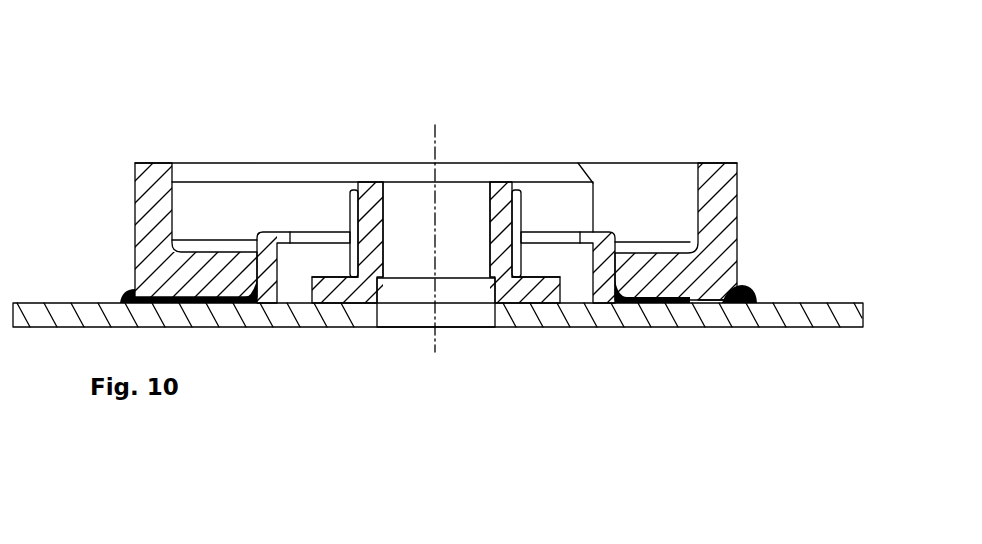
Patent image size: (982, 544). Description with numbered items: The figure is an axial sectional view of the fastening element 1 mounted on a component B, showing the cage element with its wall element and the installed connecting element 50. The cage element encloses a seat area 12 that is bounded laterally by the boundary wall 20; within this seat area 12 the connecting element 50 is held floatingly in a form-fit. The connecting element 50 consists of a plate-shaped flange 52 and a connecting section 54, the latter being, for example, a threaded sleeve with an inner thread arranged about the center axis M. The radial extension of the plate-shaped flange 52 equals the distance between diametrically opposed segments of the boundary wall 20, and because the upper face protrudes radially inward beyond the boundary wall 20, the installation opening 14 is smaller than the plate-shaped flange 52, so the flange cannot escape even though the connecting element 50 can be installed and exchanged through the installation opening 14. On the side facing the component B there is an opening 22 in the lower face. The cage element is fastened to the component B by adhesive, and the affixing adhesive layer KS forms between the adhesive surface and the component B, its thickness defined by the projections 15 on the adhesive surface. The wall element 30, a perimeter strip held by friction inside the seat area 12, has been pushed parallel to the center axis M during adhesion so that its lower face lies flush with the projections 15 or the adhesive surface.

The fastening element 1 is at (825, 50).
The component B is at (797, 303).
The boundary wall 20 is at (135, 205).
The seat area 12 is at (290, 203).
The installation opening 14 is at (655, 187).
The connecting element 50 is at (370, 200).
The connecting section 54 is at (503, 203).
The plate-shaped flange 52 is at (337, 288).
The opening 22 is at (575, 297).
The wall element 30 is at (605, 278).
The affixing adhesive layer KS is at (202, 303).
The projections 15 is at (708, 293).
The center axis M is at (447, 226).